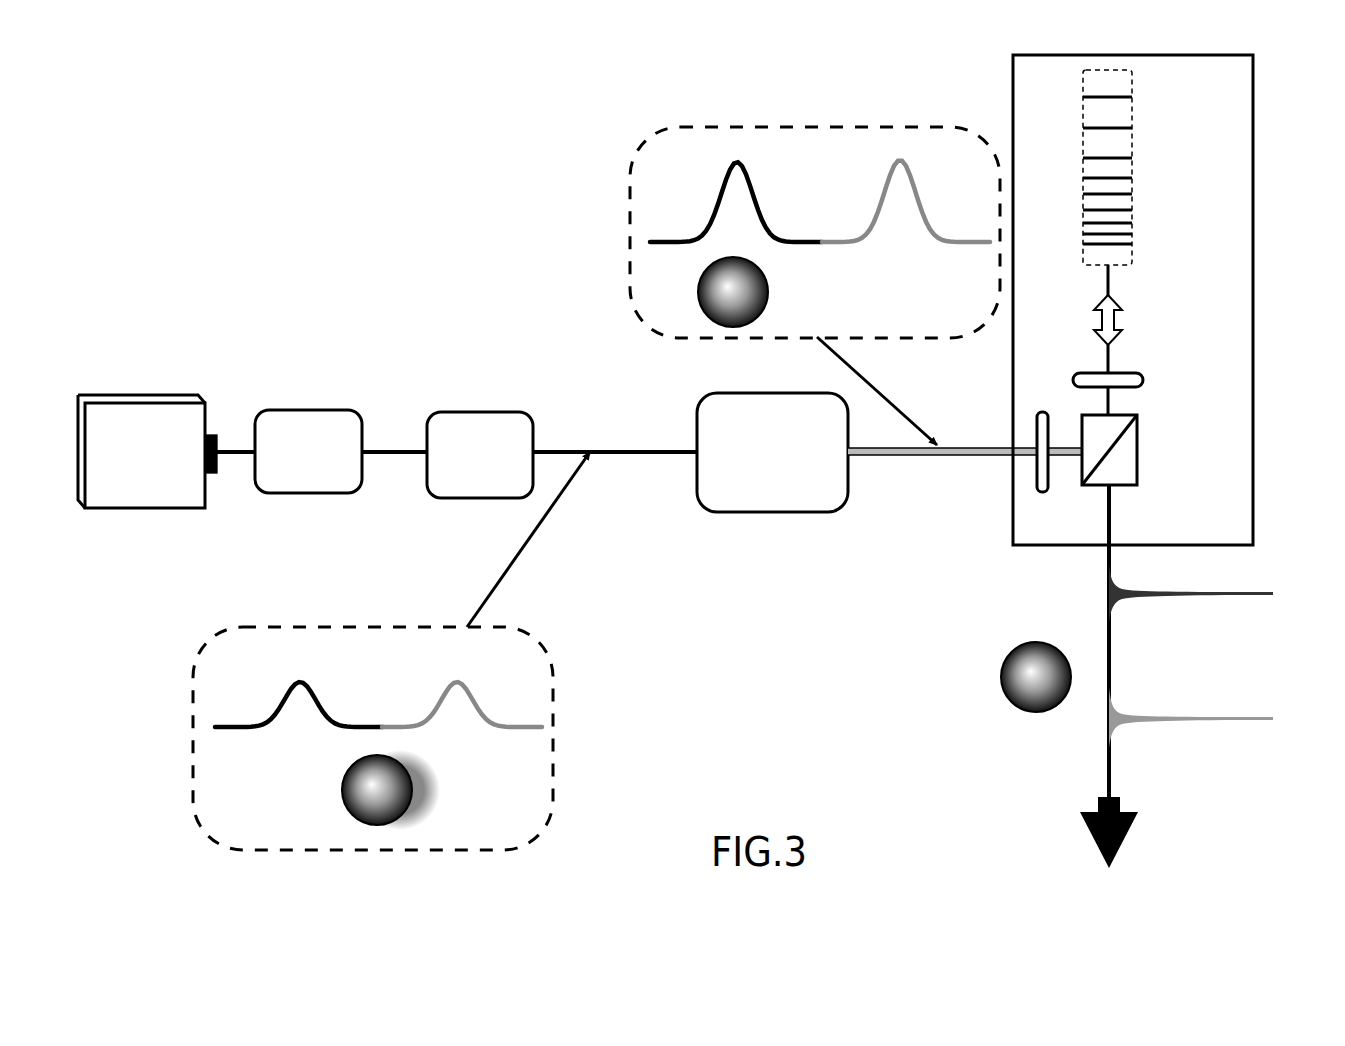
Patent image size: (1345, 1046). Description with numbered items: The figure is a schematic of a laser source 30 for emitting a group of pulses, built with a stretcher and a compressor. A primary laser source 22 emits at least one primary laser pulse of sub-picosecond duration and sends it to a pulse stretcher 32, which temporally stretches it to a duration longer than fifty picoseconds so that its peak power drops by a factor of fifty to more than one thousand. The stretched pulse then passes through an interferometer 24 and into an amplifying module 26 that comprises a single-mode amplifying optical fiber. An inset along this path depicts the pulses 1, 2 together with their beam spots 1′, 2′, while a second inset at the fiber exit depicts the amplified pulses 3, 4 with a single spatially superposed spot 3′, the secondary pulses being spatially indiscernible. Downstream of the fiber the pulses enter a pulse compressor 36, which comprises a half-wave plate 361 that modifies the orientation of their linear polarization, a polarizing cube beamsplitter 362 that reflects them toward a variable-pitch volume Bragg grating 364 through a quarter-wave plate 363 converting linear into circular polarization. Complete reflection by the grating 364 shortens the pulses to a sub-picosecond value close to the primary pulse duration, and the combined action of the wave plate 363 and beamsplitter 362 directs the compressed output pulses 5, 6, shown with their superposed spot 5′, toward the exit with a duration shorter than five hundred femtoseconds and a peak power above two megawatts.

The laser source 30 is at (278, 174).
The primary laser source 22 is at (131, 464).
The pulse stretcher 32 is at (294, 464).
The interferometer 24 is at (466, 464).
The amplifying module 26 is at (758, 464).
The pulse compressor 36 is at (1254, 283).
The half-wave plate 361 is at (1042, 492).
The polarizing cube beamsplitter 362 is at (1137, 445).
The lens 363 is at (1143, 378).
The variable-pitch volume Bragg grating 364 is at (1133, 158).
The first pulse 1 is at (308, 682).
The second pulse 2 is at (440, 690).
The first beam spot 1′ is at (341, 790).
The second beam spot 2′ is at (425, 778).
The first pulse after processing 3 is at (720, 182).
The second pulse after processing 4 is at (882, 182).
The beam spot after processing 3′ is at (768, 300).
The output pulse 5 is at (1207, 600).
The output pulse 6 is at (1207, 722).
The output beam spot 5′ is at (1002, 692).